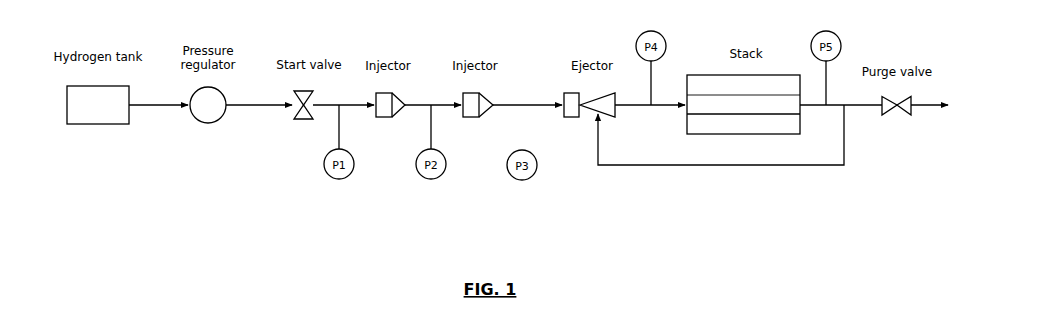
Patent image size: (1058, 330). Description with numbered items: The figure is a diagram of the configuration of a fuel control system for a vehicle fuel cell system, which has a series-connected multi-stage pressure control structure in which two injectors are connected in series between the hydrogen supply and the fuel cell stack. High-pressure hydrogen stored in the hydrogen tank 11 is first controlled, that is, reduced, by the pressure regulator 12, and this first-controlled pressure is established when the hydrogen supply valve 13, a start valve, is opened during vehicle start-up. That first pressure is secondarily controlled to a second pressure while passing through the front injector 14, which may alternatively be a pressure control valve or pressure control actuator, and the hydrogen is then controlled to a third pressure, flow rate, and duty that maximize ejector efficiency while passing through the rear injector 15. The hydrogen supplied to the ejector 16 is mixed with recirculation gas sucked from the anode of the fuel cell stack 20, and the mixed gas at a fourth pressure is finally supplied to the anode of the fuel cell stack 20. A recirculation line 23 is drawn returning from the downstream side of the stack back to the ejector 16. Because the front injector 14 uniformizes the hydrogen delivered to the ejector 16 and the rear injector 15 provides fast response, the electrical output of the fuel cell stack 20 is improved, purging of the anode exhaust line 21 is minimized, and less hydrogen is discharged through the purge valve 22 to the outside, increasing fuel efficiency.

The hydrogen tank 11 is at (97, 124).
The pressure regulator 12 is at (206, 123).
The hydrogen supply valve 13 is at (297, 119).
The flow device 14 is at (383, 118).
The injector 15 is at (472, 118).
The ejector 16 is at (572, 118).
The fuel cell stack 20 is at (715, 135).
The anode exhaust line 21 is at (813, 103).
The purge valve 22 is at (897, 115).
The recirculation line 23 is at (779, 165).